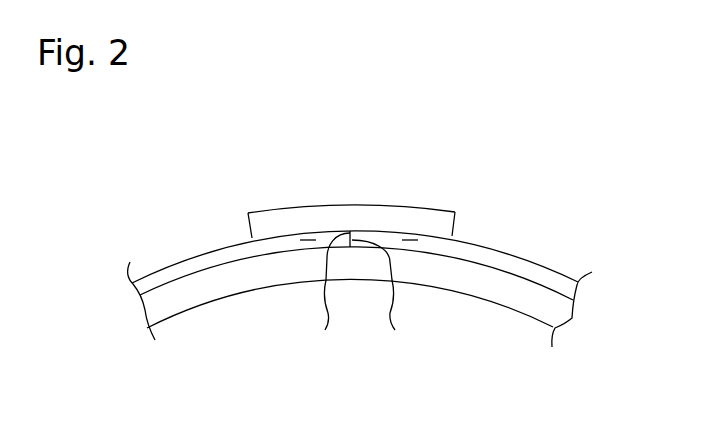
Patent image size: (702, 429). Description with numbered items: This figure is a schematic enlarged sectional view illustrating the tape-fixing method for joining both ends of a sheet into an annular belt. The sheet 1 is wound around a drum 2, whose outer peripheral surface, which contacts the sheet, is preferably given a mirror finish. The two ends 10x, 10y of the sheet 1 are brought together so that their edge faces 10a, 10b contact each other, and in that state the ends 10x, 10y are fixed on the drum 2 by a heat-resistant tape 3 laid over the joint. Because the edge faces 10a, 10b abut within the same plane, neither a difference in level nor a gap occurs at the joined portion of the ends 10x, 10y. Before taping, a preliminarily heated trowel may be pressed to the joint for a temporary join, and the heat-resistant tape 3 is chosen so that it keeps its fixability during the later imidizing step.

The sheet 1 is at (198, 263).
The drum 2 is at (235, 285).
The heat-resistant tape 3 is at (353, 212).
The end of the sheet 10x is at (410, 242).
The end of the sheet 10y is at (308, 243).
The edge face 10a is at (386, 302).
The edge face 10b is at (328, 298).